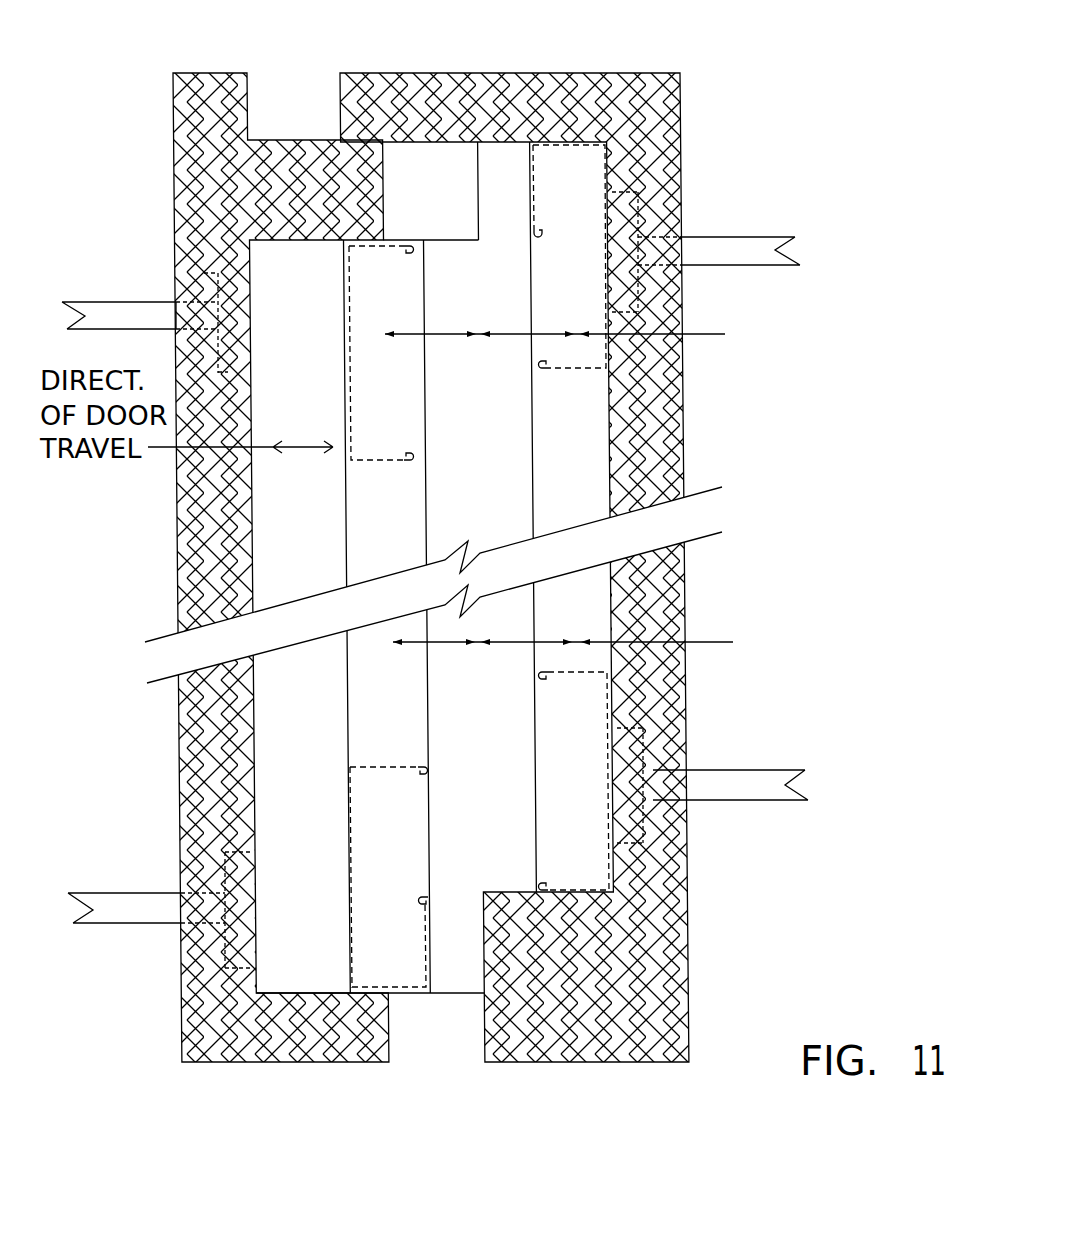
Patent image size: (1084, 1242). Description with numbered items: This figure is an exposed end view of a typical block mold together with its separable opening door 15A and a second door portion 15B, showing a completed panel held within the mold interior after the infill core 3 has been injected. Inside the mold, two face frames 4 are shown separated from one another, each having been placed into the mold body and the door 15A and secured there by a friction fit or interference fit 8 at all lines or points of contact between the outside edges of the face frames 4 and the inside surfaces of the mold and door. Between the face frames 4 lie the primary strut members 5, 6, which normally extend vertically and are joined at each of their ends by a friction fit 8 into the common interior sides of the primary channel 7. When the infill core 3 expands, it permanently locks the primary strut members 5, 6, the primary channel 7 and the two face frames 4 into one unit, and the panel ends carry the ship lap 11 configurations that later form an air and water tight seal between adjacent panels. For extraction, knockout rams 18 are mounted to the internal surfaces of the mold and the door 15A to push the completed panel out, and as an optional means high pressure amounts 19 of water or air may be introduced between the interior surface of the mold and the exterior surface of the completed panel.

The separable opening door 15A is at (488, 71).
The door frame jamb (second side) 15B is at (205, 72).
The infill core 3 is at (567, 487).
The ship lap 11 is at (488, 218).
The face frame 4 is at (437, 567).
The primary channel member 7 is at (370, 503).
The primary strut member 5 is at (345, 370).
The primary strut member 6 is at (353, 827).
The friction fit 8 is at (350, 240).
The knockout ram 18 is at (110, 310).
The high pressure amounts of water or air 19 is at (313, 569).